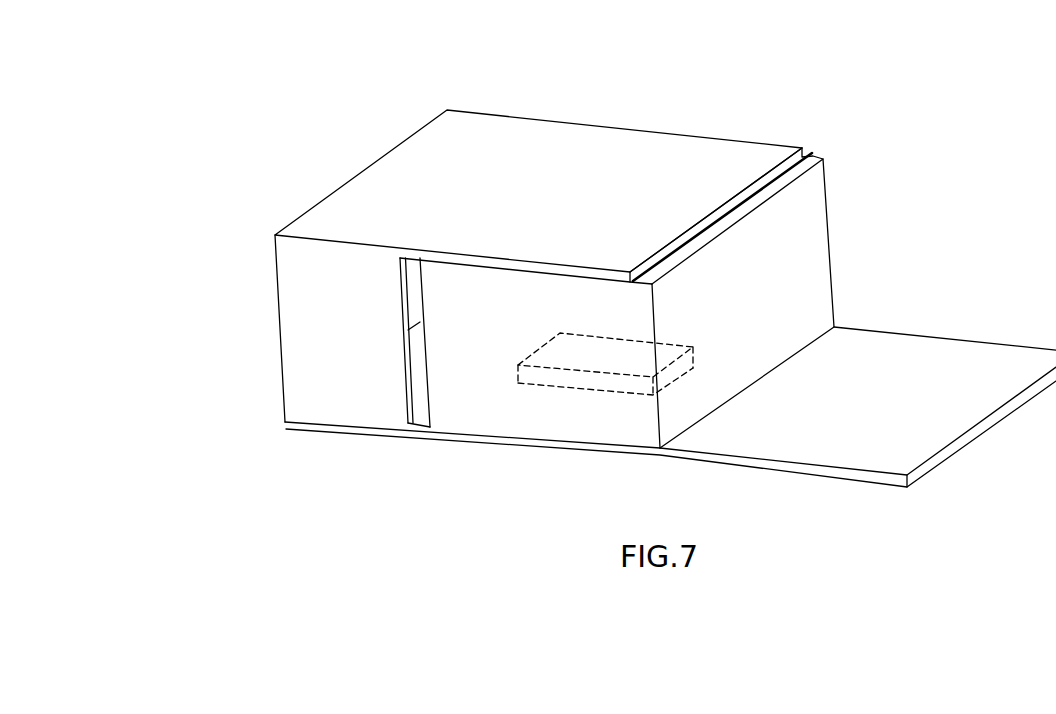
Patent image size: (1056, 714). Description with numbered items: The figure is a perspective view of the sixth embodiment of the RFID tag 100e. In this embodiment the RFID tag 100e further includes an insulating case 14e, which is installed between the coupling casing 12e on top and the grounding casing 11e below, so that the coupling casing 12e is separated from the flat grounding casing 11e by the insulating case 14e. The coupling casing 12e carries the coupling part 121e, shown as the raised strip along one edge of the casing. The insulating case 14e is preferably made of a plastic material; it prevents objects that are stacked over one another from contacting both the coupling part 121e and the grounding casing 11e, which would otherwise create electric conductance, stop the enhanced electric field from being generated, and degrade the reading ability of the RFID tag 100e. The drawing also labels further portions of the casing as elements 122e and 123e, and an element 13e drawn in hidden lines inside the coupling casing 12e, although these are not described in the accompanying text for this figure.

The RFID tag 100e is at (388, 108).
The grounding casing 11e is at (727, 463).
The coupling casing 12e is at (519, 255).
The coupling part 121e is at (762, 163).
The top wall 122e is at (465, 135).
The front wall 123e is at (290, 333).
The internal component 13e is at (593, 386).
The insulating case 14e is at (822, 255).